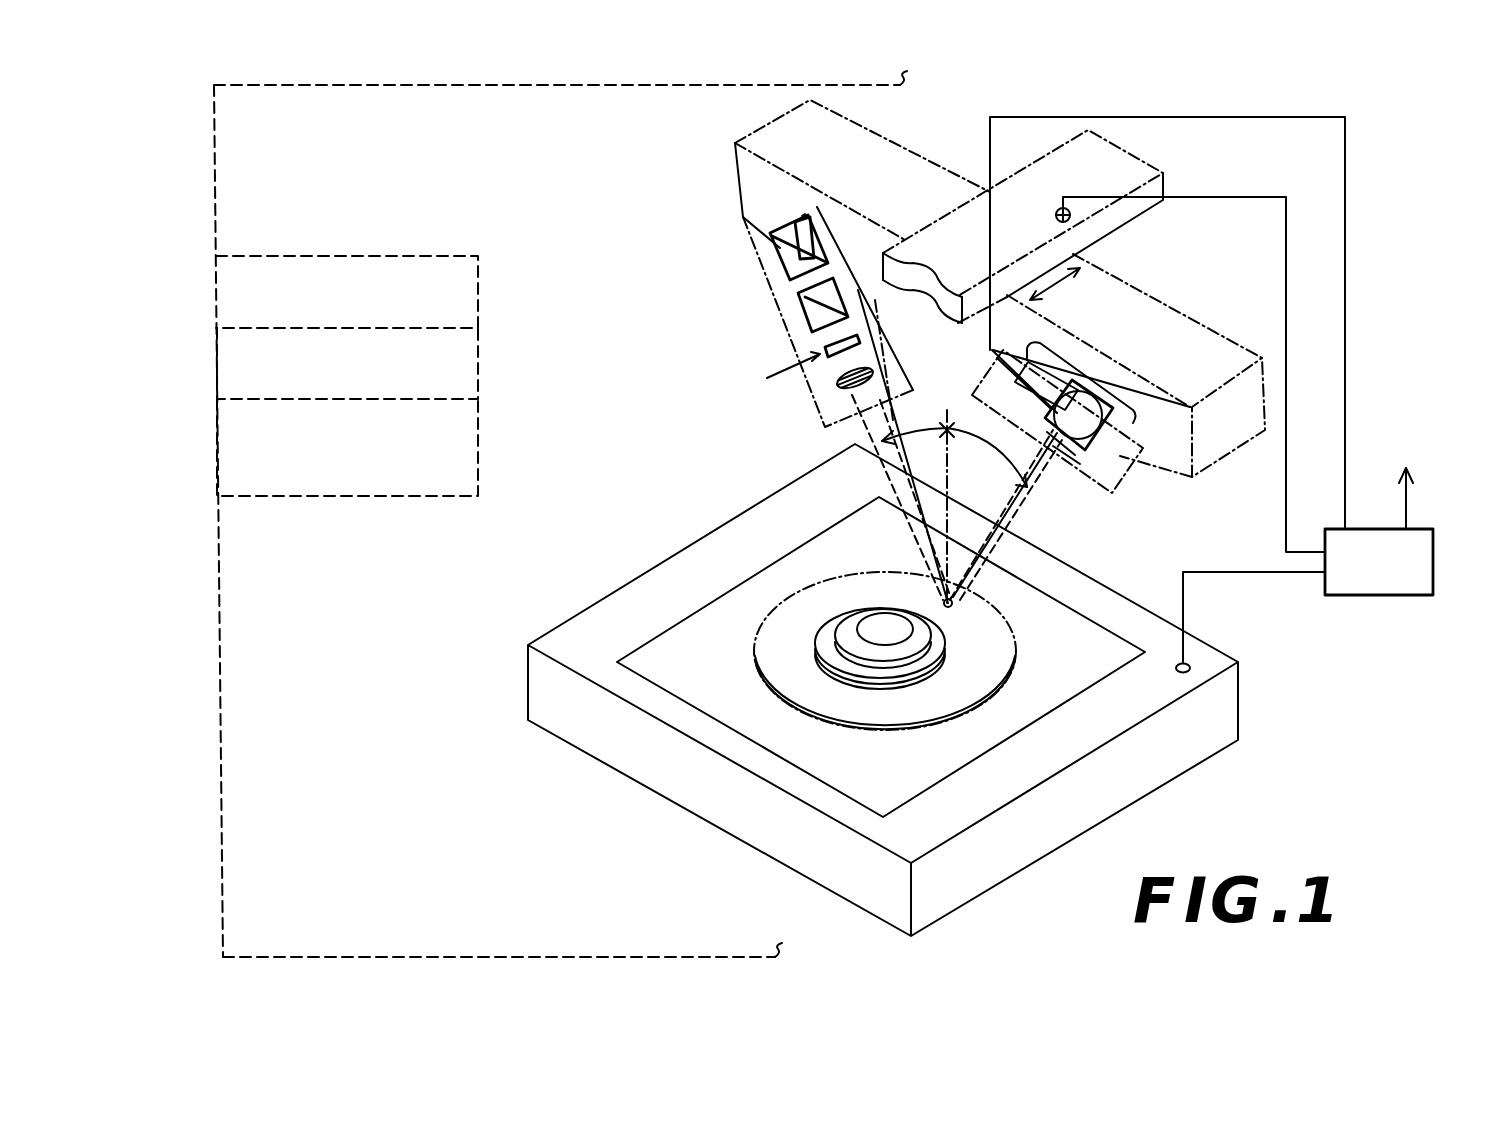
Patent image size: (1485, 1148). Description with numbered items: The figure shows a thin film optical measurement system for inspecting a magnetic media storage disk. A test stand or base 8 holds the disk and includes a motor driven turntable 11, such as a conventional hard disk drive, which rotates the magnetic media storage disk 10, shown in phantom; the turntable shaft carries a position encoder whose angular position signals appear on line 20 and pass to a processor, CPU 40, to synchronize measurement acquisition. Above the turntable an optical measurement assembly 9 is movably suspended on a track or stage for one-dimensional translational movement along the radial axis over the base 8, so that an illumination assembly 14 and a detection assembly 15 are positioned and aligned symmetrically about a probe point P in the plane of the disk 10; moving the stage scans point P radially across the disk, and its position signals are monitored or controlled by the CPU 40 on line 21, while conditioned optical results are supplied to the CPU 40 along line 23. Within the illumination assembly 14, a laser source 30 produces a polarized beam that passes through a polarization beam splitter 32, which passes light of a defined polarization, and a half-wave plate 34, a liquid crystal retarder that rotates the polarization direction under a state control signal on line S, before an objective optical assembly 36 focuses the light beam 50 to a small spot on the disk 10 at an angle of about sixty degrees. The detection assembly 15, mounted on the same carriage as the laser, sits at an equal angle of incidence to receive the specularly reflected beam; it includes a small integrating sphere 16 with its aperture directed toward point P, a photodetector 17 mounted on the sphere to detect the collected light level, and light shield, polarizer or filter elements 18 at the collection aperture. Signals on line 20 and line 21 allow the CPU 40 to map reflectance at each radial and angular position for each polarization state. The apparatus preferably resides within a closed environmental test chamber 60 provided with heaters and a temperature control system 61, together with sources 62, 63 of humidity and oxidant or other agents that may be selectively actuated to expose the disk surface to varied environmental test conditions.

The base 8 is at (600, 615).
The optical measurement assembly 9 is at (718, 211).
The magnetic media storage disk 10 is at (1020, 674).
The turntable 11 is at (940, 652).
The illumination assembly 14 is at (867, 300).
The detection assembly 15 is at (1097, 377).
The integrating sphere 16 is at (1086, 431).
The photodetector 17 is at (1040, 388).
The collection aperture elements 18 is at (1045, 430).
The line 20 is at (1185, 612).
The line 21 is at (1286, 273).
The line 23 is at (1348, 273).
The laser source 30 is at (770, 240).
The polarization beam splitter 32 is at (798, 298).
The half-wave plate 34 is at (825, 348).
The objective optical assembly 36 is at (888, 386).
The CPU 40 is at (1389, 584).
The light beam 50 is at (904, 425).
The environmental test chamber 60 is at (365, 222).
The heaters and temperature control system 61 is at (344, 485).
The humidity source 62 is at (346, 388).
The oxidant source 63 is at (351, 319).